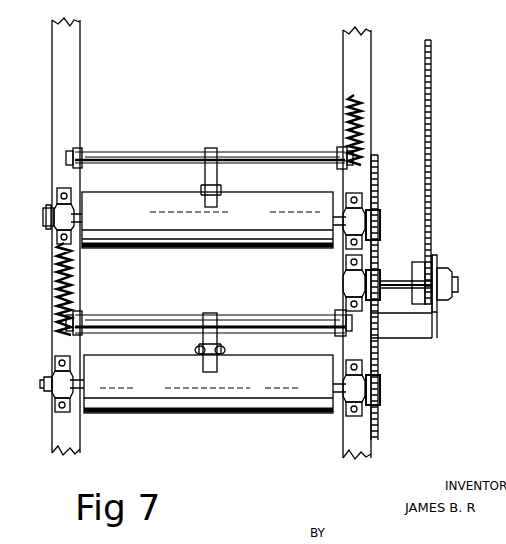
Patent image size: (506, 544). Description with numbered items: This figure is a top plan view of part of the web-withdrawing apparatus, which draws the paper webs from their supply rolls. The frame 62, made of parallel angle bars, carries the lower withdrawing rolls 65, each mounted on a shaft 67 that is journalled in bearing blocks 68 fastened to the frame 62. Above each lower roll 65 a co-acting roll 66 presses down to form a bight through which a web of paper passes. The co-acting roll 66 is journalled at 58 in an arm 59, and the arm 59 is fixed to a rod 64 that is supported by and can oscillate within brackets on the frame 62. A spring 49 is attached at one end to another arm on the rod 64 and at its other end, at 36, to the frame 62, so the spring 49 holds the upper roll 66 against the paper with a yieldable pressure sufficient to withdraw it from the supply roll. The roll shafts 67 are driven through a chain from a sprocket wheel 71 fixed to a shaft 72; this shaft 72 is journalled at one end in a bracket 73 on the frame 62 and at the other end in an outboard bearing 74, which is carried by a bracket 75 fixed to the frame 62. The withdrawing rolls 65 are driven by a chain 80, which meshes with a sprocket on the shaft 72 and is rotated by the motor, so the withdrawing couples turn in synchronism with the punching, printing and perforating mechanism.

The spring attachment point 36 is at (58, 237).
The spring 49 is at (362, 118).
The journal 58 is at (199, 349).
The arm 59 is at (222, 345).
The frame 62 is at (80, 52).
The rod 64 is at (138, 325).
The roll 65 is at (246, 250).
The co-acting roll 66 is at (205, 183).
The shaft 67 is at (44, 382).
The bearing blocks 68 is at (60, 372).
The sprocket wheel 71 is at (379, 265).
The shaft 72 is at (390, 280).
The bracket 73 is at (346, 284).
The outboard bearing 74 is at (438, 268).
The bracket 75 is at (408, 340).
The chain 80 is at (432, 88).